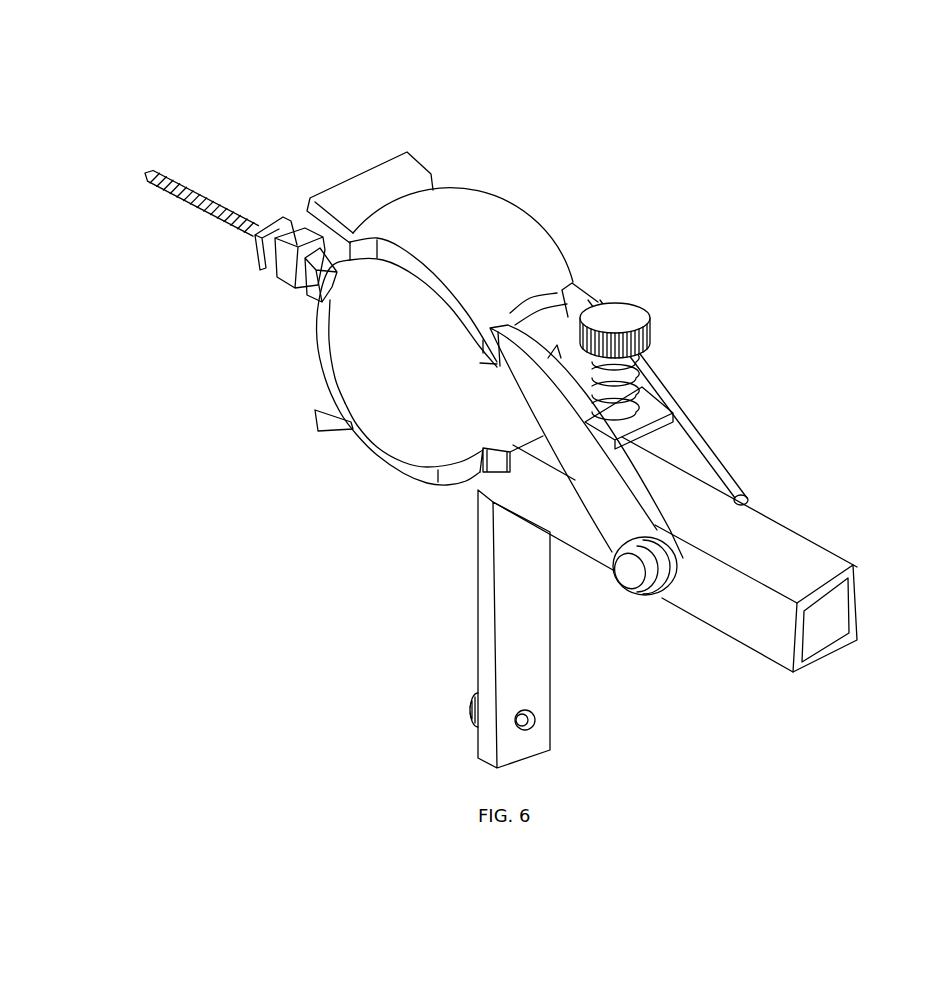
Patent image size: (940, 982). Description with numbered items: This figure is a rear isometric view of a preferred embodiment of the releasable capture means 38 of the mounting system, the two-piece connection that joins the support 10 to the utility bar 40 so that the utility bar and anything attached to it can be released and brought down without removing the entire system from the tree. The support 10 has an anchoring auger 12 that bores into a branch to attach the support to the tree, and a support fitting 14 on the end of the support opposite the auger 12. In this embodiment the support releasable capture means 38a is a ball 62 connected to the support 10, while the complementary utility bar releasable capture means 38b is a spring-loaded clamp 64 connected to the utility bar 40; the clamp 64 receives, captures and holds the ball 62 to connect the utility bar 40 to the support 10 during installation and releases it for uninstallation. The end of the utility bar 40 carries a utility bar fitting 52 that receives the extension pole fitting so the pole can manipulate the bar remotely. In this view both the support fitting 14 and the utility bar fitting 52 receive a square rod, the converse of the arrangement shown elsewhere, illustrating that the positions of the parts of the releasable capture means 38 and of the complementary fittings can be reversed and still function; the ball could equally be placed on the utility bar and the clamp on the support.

The support 10 is at (317, 352).
The auger 12 is at (220, 205).
The support fitting 14 is at (513, 417).
The releasable capture means 38 is at (594, 255).
The support releasable capture means 38a is at (397, 333).
The utility bar releasable capture means 38b is at (493, 245).
The utility bar 40 is at (757, 510).
The utility bar fitting 52 is at (835, 607).
The ball 62 is at (390, 417).
The spring-loaded clamp 64 is at (655, 382).